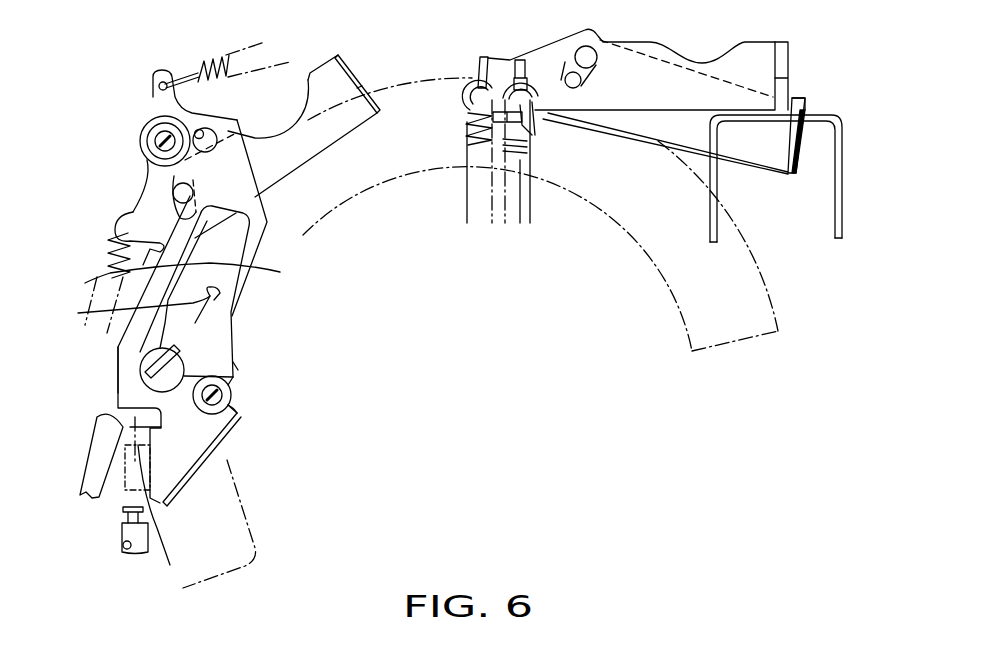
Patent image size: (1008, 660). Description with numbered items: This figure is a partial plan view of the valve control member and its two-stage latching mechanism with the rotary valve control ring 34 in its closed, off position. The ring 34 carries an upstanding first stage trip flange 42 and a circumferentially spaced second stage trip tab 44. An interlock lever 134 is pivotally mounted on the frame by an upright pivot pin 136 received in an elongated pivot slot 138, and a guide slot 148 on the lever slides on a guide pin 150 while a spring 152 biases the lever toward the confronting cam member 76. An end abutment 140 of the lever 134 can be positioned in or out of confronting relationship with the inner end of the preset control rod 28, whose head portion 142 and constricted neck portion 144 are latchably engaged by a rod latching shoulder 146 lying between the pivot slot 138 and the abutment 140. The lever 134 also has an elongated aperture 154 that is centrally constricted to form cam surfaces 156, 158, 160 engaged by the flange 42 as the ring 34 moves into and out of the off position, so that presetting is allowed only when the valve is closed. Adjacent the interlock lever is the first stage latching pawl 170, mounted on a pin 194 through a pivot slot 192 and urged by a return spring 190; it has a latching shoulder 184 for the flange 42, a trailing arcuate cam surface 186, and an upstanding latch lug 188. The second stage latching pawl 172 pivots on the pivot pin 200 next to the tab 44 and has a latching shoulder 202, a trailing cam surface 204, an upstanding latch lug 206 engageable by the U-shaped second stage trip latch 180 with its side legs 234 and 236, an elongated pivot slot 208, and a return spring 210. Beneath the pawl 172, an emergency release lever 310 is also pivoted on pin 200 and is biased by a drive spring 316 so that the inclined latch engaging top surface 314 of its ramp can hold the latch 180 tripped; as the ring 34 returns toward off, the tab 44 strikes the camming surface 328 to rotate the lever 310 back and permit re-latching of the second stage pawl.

The preset conditioning or control rod 28 is at (124, 546).
The rotary valve control ring 34 is at (369, 173).
The first stage trip flange 42 is at (118, 382).
The second stage trip tab 44 is at (490, 147).
The cam member 76 is at (95, 425).
The interlock lever 134 is at (231, 347).
The pivot pin 136 is at (155, 135).
The pivot slot 138 is at (202, 130).
The end abutment 140 is at (160, 508).
The head portion 142 is at (123, 508).
The constricted neck portion 144 is at (122, 528).
The rod latching shoulder 146 is at (153, 432).
The guide slot 148 is at (232, 385).
The guide pin 150 is at (230, 408).
The spring 152 is at (209, 62).
The elongated aperture 154 is at (220, 294).
The cam surface 156 is at (238, 364).
The cam surface 158 is at (140, 360).
The cam surface 160 is at (122, 305).
The first stage latching pawl 170 is at (315, 72).
The second stage latching pawl 172 is at (770, 22).
The second stage trip latch 180 is at (817, 115).
The latching shoulder 184 is at (204, 291).
The arcuate cam surface 186 is at (105, 270).
The latch lug 188 is at (372, 88).
The return spring 190 is at (117, 237).
The pivot slot 192 is at (178, 194).
The pin 194 is at (177, 186).
The pivot pin 200 is at (585, 57).
The latching shoulder 202 is at (538, 125).
The trailing cam surface 204 is at (528, 150).
The latch lug 206 is at (787, 90).
The pivot slot 208 is at (583, 80).
The return spring 210 is at (530, 207).
The side leg 234 is at (709, 222).
The side leg 236 is at (833, 225).
The emergency release lever 310 is at (795, 172).
The inclined latch engaging top surface 314 is at (797, 180).
The drive spring 316 is at (467, 128).
The camming surface 328 is at (468, 82).